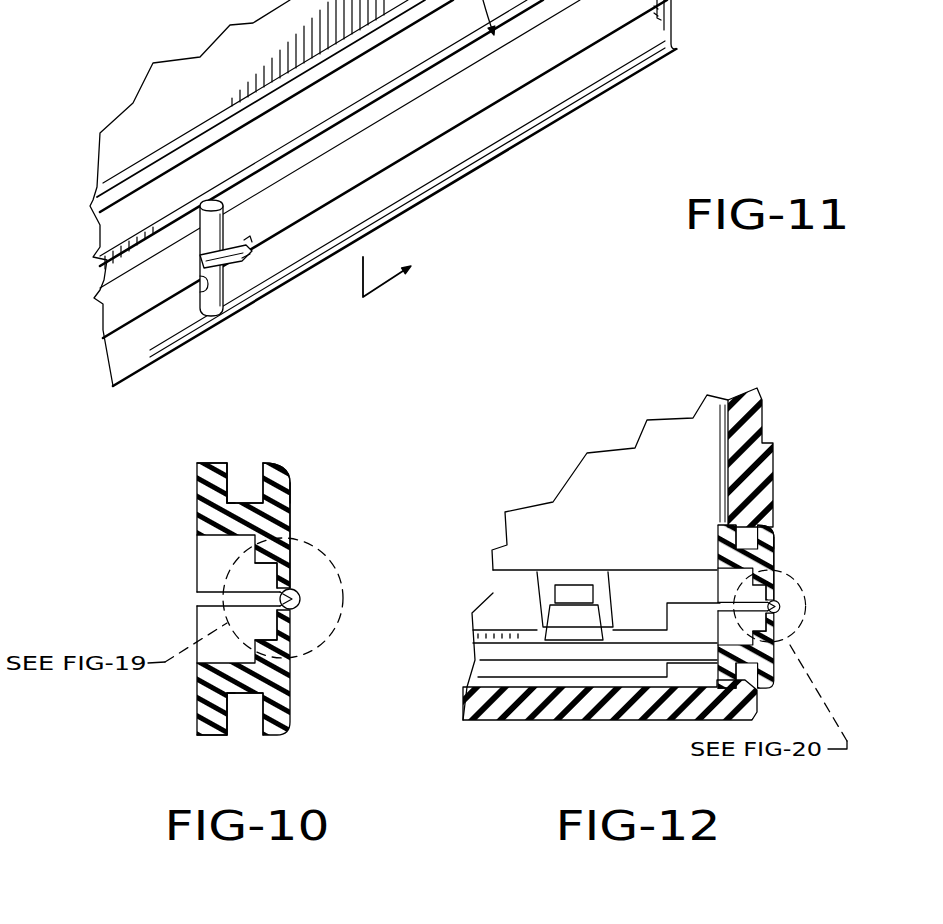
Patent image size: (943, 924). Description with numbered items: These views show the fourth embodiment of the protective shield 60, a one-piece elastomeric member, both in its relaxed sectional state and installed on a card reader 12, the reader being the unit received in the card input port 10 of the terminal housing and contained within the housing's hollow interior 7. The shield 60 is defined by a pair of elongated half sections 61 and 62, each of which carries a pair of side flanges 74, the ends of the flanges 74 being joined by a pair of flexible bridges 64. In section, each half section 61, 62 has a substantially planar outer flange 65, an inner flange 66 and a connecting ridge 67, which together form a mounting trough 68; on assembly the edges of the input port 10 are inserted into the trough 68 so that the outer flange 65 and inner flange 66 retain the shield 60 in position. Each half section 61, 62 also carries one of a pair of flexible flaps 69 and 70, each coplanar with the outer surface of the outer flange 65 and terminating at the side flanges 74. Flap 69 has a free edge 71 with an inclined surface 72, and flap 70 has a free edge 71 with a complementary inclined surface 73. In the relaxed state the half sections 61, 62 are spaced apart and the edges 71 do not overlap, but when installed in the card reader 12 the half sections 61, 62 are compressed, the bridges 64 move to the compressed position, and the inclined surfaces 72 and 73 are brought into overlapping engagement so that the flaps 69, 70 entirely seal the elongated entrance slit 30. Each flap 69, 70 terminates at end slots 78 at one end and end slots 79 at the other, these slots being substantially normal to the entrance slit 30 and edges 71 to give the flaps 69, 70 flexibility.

In FIG. 12, the hollow interior 7 is at (690, 448).
In FIG. 11, the card input port 10 is at (203, 292).
In FIG. 11, the card reader 12 is at (400, 273).
In FIG. 12, the card reader 12 is at (577, 630).
In FIG. 11, the entrance slit 30 is at (510, 96).
In FIG. 12, the entrance slit 30 is at (733, 595).
In FIG. 10, the shield 60 is at (303, 464).
In FIG. 12, the shield 60 is at (788, 543).
In FIG. 10, the half section 61 is at (276, 463).
In FIG. 12, the half section 61 is at (780, 527).
In FIG. 11, the half section 62 is at (630, 82).
In FIG. 10, the half section 62 is at (293, 722).
In FIG. 12, the half section 62 is at (780, 680).
In FIG. 11, the flexible bridge 64 is at (233, 259).
In FIG. 10, the flexible bridge 64 is at (298, 588).
In FIG. 12, the flexible bridge 64 is at (785, 608).
In FIG. 10, the outer flange 65 is at (290, 512).
In FIG. 12, the outer flange 65 is at (775, 562).
In FIG. 10, the inner flange 66 is at (213, 468).
In FIG. 12, the inner flange 66 is at (718, 533).
In FIG. 10, the connecting ridge 67 is at (245, 502).
In FIG. 10, the mounting trough 68 is at (230, 470).
In FIG. 11, the flexible flap 69 is at (587, 45).
In FIG. 10, the flexible flap 69 is at (287, 597).
In FIG. 12, the flexible flap 69 is at (785, 591).
In FIG. 11, the flexible flap 70 is at (562, 66).
In FIG. 10, the flexible flap 70 is at (300, 607).
In FIG. 12, the flexible flap 70 is at (783, 625).
In FIG. 11, the free edge 71 is at (460, 125).
In FIG. 10, the free edge 71 is at (288, 598).
In FIG. 10, the inclined surface 72 is at (288, 600).
In FIG. 10, the inclined surface 73 is at (296, 601).
In FIG. 11, the side flange 74 is at (655, 50).
In FIG. 11, the end slot 78 is at (250, 236).
In FIG. 11, the end slot 79 is at (658, 20).